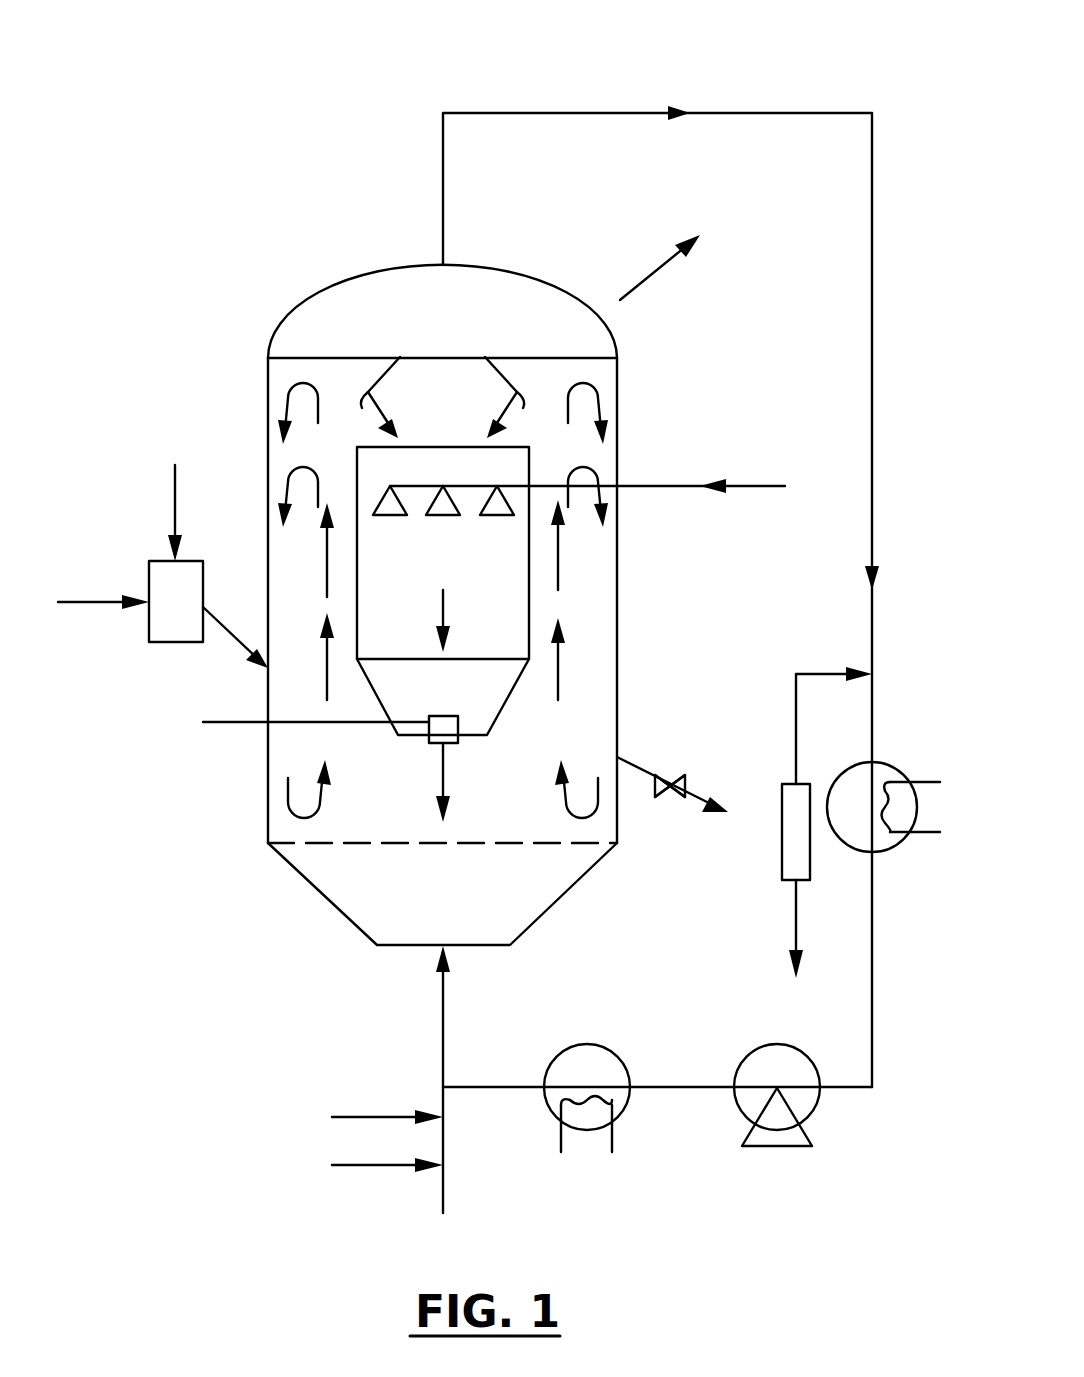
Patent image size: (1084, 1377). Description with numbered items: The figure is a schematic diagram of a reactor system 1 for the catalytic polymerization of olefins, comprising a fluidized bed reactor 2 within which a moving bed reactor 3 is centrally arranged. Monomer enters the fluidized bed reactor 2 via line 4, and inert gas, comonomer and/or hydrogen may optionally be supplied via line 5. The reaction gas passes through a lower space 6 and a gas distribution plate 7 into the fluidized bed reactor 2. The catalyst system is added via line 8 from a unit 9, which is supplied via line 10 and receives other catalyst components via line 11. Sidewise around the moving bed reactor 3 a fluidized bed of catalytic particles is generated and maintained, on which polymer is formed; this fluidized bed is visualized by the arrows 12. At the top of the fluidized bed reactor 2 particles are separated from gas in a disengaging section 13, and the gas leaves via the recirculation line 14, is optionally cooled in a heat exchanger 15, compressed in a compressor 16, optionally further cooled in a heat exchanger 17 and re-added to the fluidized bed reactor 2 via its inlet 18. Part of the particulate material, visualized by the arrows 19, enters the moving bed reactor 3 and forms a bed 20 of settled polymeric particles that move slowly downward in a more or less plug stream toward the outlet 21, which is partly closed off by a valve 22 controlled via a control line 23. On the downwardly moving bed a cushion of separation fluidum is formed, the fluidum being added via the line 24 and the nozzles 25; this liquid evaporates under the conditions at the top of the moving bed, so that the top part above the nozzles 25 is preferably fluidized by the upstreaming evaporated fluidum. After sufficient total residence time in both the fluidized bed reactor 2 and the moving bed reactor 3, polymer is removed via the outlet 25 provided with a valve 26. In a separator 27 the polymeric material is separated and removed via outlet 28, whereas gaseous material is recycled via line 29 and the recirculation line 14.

The reactor system 1 is at (230, 181).
The fluidized bed reactor 2 is at (617, 393).
The moving bed reactor 3 is at (530, 598).
The line 4 is at (348, 1117).
The line 5 is at (348, 1165).
The lower space 6 is at (335, 890).
The gas distribution plate 7 is at (383, 843).
The line 8 is at (228, 617).
The unit 9 is at (180, 642).
The line 10 is at (175, 473).
The line 11 is at (88, 602).
The arrows 12 is at (327, 545).
The disengaging section 13 is at (372, 288).
The recirculation line 14 is at (765, 113).
The heat exchanger 15 is at (888, 768).
The compressor 16 is at (745, 1065).
The heat exchanger 17 is at (585, 1050).
The inlet 18 is at (443, 1005).
The arrows 19 is at (485, 357).
The bed 20 is at (443, 447).
The outlet 21 is at (455, 738).
The valve 22 is at (450, 717).
The control line 23 is at (225, 722).
The line 24 is at (650, 486).
The nozzles 25 is at (492, 516).
The valve 26 is at (667, 797).
The separator 27 is at (783, 840).
The outlet 28 is at (795, 915).
The line 29 is at (800, 674).